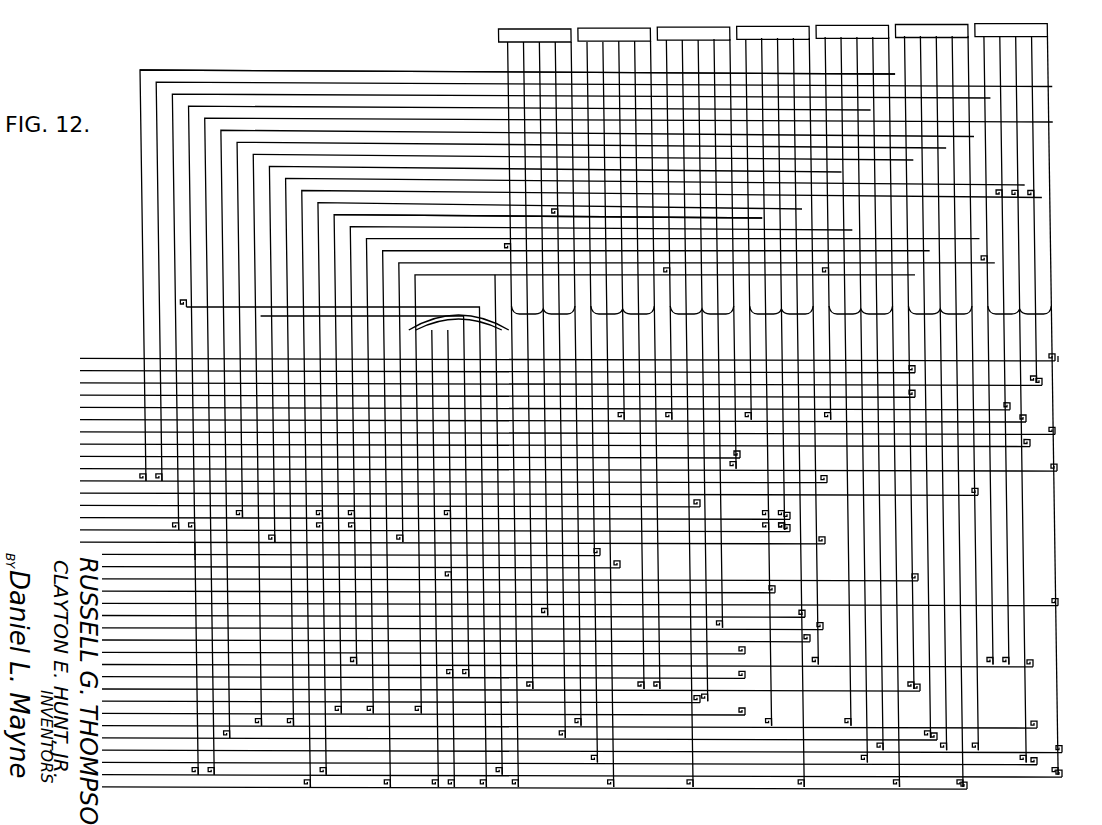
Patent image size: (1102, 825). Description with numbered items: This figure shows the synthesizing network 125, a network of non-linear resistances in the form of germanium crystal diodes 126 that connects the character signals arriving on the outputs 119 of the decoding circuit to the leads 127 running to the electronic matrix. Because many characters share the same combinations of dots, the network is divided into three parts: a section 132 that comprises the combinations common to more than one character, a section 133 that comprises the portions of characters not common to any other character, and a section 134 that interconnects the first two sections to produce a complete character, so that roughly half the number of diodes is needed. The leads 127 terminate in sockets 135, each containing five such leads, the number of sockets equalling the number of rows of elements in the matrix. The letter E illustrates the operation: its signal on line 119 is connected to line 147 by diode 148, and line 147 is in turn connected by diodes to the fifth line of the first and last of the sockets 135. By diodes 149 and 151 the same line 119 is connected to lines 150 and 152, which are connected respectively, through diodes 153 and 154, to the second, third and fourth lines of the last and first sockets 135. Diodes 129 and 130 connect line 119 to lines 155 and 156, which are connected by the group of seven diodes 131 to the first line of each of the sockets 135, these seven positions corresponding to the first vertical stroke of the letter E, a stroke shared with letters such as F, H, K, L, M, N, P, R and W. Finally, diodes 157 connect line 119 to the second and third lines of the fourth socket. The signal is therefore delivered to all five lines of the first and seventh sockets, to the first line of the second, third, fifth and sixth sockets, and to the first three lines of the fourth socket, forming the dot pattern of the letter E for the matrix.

The outputs 119 is at (122, 367).
The synthesizing network 125 is at (320, 64).
The diodes 126 is at (188, 558).
The leads 127 is at (777, 402).
The diodes 129 is at (454, 518).
The diodes 130 is at (504, 332).
The group of seven diodes 131 is at (992, 259).
The section 132 is at (1046, 170).
The section 133 is at (1055, 534).
The section 134 is at (198, 303).
The sockets 135 is at (600, 31).
The line 147 is at (599, 412).
The diode 148 is at (182, 528).
The diode 149 is at (316, 528).
The line 150 is at (430, 204).
The diode 151 is at (360, 525).
The line 152 is at (456, 226).
The diodes 153 is at (1040, 195).
The diodes 154 is at (563, 216).
The line 155 is at (456, 265).
The line 156 is at (447, 274).
The diodes 157 is at (780, 518).